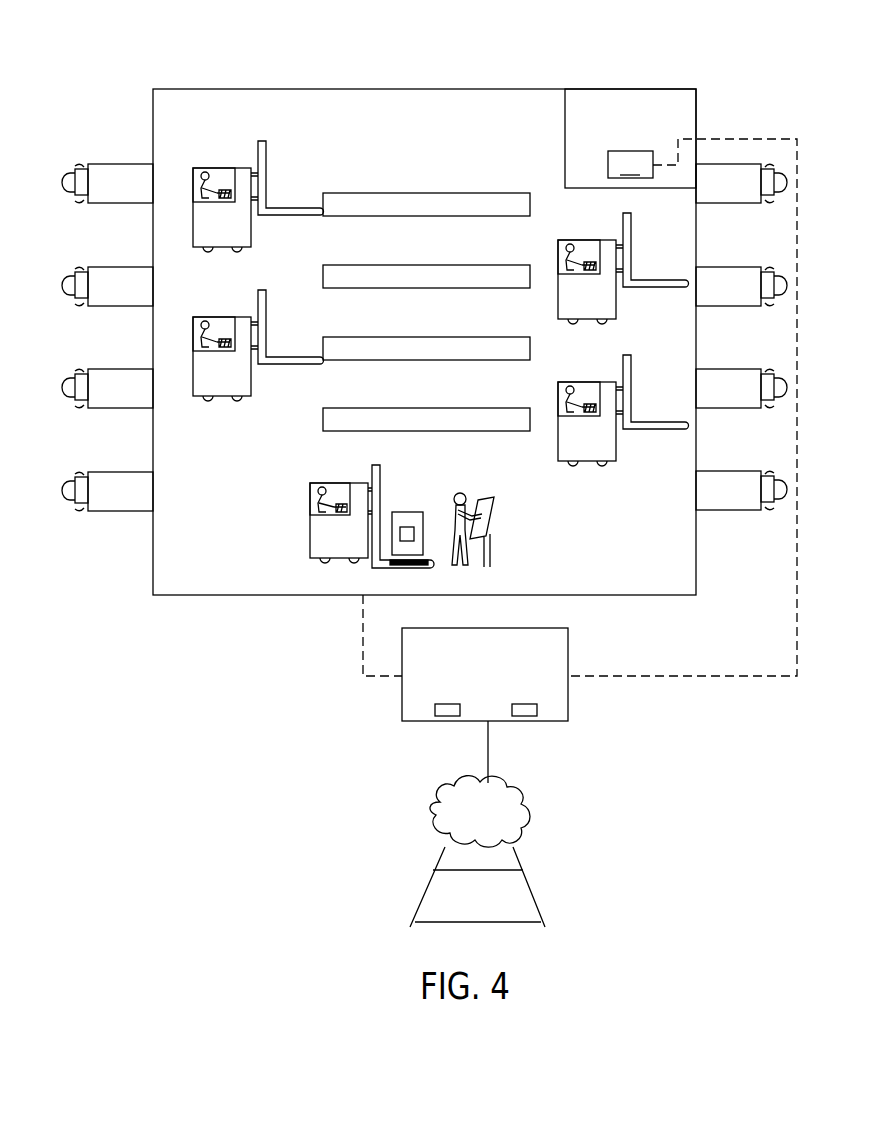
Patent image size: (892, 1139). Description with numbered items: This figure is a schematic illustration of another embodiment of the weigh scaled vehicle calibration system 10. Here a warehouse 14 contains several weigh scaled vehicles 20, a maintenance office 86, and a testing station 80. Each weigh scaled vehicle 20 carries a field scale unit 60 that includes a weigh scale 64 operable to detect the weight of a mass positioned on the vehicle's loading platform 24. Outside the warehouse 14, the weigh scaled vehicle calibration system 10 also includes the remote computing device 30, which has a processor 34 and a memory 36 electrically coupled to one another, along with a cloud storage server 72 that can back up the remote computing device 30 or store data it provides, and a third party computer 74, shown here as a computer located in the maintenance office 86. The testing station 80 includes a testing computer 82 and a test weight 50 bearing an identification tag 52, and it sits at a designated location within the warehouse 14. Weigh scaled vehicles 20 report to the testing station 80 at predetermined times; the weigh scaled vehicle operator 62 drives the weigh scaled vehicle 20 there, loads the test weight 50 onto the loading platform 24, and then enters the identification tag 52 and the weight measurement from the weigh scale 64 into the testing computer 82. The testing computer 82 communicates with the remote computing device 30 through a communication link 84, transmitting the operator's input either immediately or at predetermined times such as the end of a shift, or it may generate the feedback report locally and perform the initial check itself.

The weigh scaled vehicle calibration system 10 is at (331, 676).
The warehouse 14 is at (603, 60).
The weigh scaled vehicle 20 is at (222, 168).
The loading platform 24 is at (430, 560).
The remote computing device 30 is at (569, 652).
The processor 34 is at (444, 719).
The memory 36 is at (526, 719).
The test weight 50 is at (397, 512).
The identification tag 52 is at (414, 527).
The field scale unit 60 is at (372, 577).
The weigh scaled vehicle operator 62 is at (463, 493).
The weigh scale 64 is at (378, 567).
The cloud storage server 72 is at (558, 807).
The third party computer 74 is at (630, 164).
The testing station 80 is at (509, 507).
The testing computer 82 is at (490, 499).
The communication link 84 is at (362, 632).
The maintenance office 86 is at (572, 125).